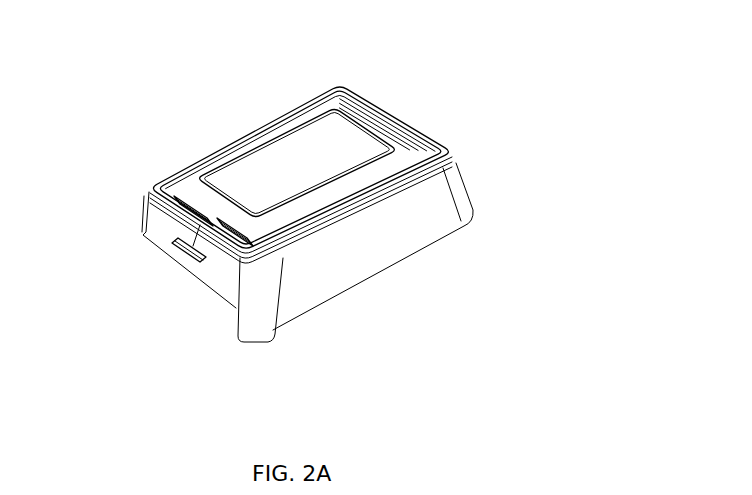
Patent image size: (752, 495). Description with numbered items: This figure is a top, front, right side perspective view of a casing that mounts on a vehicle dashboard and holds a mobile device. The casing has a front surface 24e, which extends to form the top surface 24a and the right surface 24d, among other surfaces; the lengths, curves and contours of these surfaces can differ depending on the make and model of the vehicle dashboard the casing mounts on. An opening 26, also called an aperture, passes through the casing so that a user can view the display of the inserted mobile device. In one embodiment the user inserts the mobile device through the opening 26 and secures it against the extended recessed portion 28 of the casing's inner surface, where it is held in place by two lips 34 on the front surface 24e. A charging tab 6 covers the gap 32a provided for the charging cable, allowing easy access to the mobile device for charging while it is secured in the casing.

The charging tab 6 is at (177, 252).
The top surface 24a is at (387, 232).
The right surface 24d is at (163, 230).
The front surface 24e is at (387, 115).
The opening 26 is at (298, 110).
The extended recessed portion 28 is at (393, 165).
The gap 32a is at (203, 228).
The lips 34 is at (242, 138).